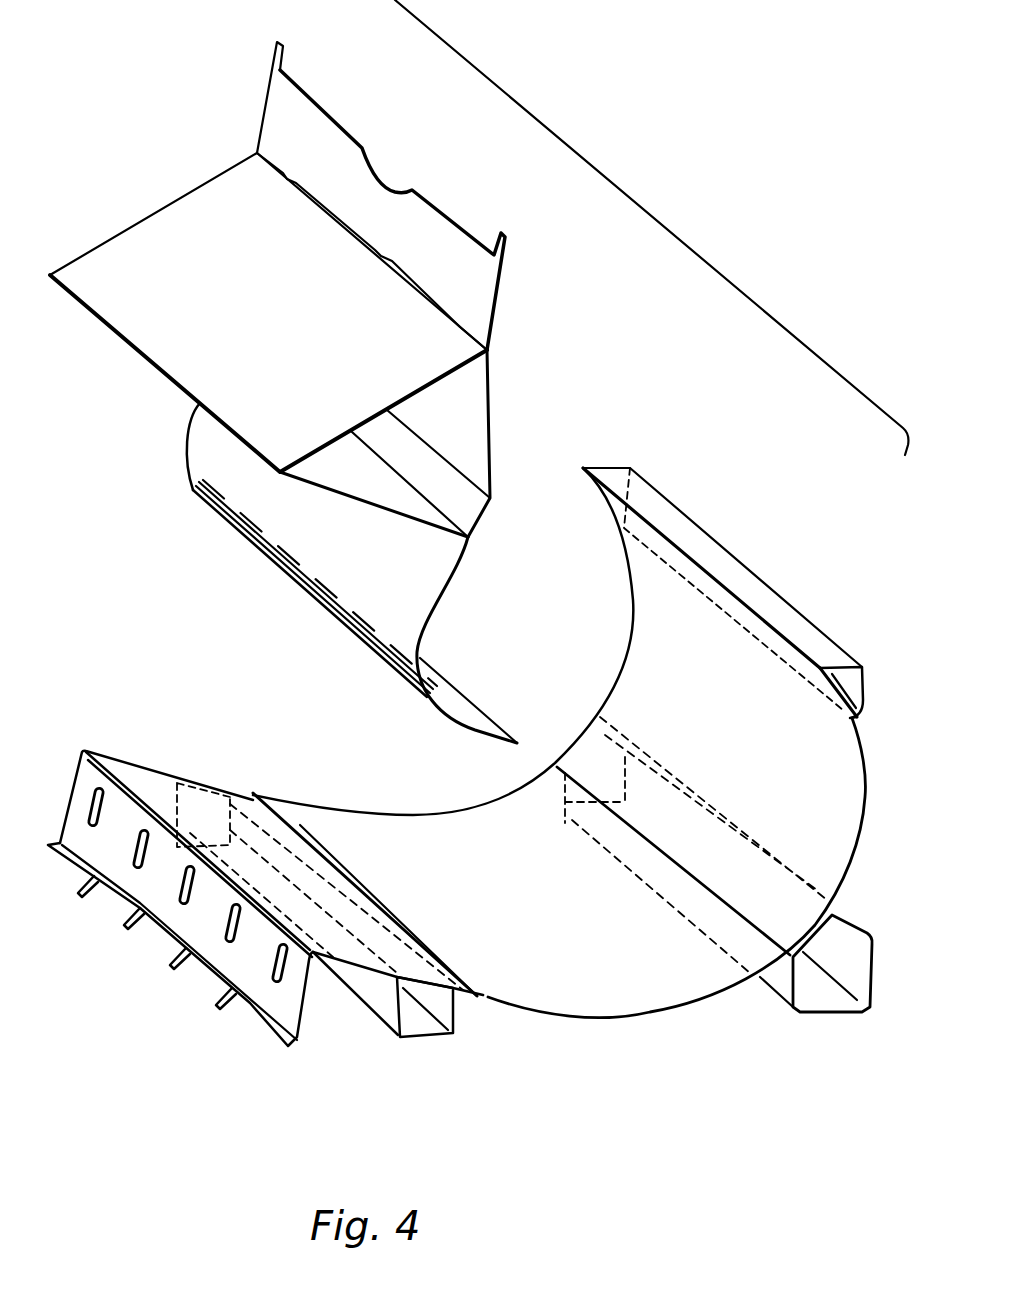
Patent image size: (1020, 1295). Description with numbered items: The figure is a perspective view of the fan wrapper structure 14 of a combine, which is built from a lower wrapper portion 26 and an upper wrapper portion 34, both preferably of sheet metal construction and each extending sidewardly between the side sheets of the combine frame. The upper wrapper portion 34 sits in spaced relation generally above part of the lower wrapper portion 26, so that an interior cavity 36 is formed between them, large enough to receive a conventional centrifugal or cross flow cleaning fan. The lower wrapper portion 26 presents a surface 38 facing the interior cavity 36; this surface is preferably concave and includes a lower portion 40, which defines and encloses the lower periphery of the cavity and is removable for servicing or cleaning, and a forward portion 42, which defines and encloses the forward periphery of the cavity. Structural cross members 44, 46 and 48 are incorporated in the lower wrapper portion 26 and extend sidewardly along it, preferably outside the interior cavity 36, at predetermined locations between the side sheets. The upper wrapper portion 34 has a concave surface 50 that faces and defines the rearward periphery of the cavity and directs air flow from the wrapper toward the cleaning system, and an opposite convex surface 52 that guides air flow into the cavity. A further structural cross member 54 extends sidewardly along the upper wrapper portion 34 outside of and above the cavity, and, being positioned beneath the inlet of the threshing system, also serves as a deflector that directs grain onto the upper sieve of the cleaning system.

The fan wrapper structure 14 is at (613, 184).
The lower wrapper portion 26 is at (693, 1010).
The upper wrapper portion 34 is at (186, 451).
The interior cavity 36 is at (566, 649).
The surface 38 is at (420, 857).
The lower portion 40 is at (577, 955).
The forward portion 42 is at (670, 668).
The structural cross member 44 is at (455, 1036).
The structural cross member 46 is at (830, 1017).
The structural cross member 48 is at (866, 692).
The concave surface 50 is at (442, 688).
The convex surface 52 is at (368, 600).
The structural cross member 54 is at (173, 245).